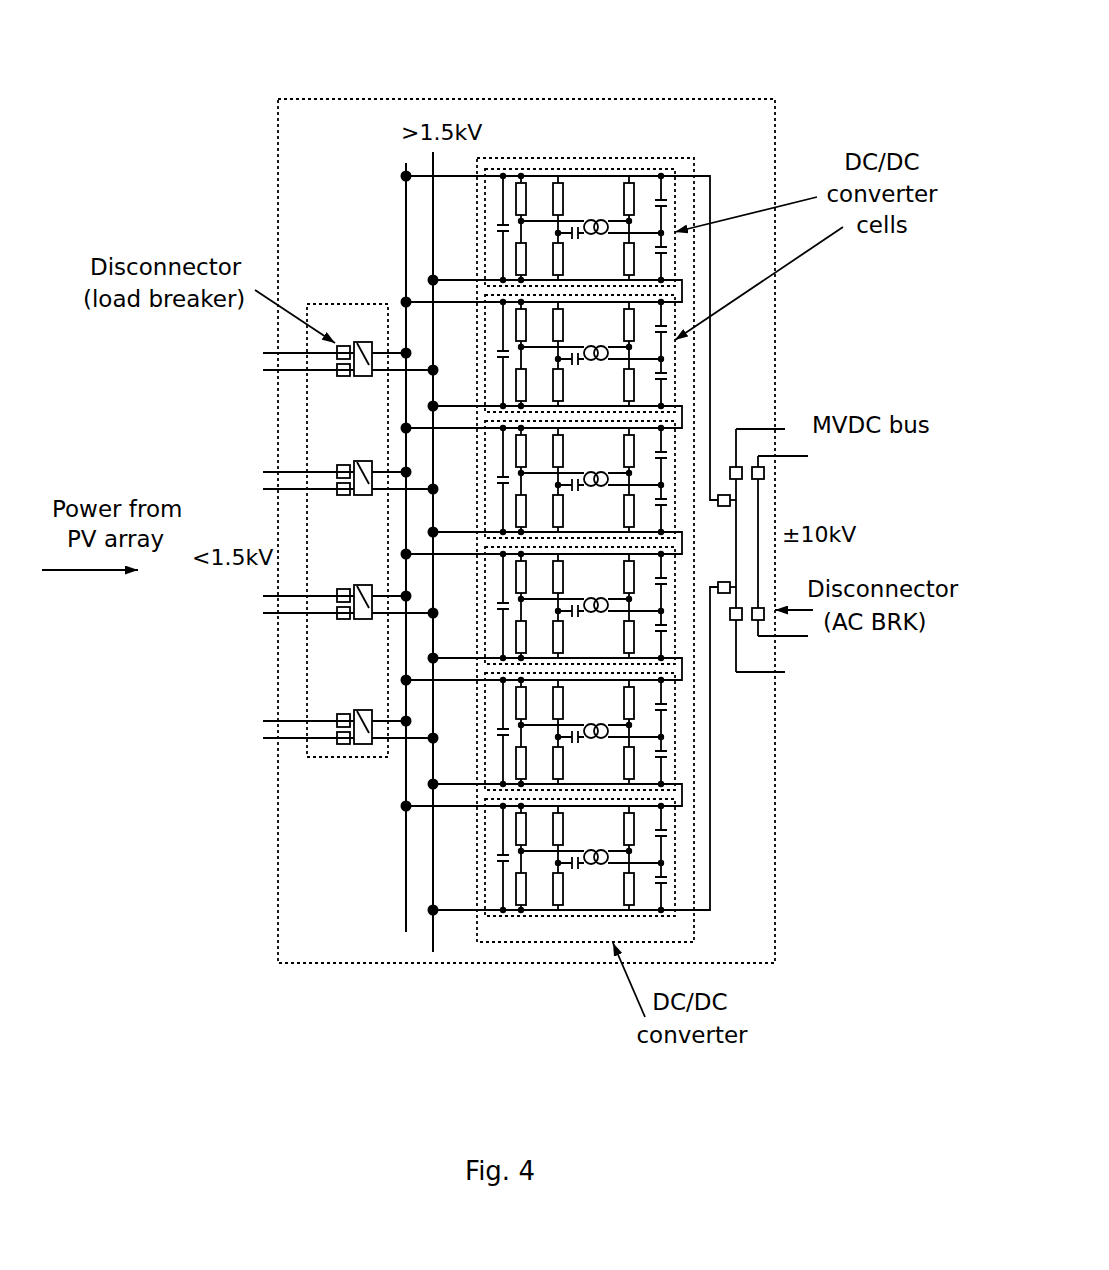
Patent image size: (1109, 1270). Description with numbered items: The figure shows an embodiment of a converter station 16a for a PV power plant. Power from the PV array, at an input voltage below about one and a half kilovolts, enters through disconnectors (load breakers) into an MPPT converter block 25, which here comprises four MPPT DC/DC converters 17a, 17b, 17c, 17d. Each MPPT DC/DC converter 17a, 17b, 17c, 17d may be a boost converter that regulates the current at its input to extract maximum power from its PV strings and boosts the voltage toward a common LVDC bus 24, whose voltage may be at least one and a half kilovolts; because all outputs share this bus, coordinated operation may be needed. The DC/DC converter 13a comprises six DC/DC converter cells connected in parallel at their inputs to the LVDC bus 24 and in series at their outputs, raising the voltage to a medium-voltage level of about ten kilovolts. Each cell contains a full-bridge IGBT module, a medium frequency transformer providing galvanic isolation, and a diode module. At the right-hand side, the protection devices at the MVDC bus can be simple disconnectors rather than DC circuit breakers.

The DC/DC converter 13a is at (597, 158).
The converter station 16a is at (742, 99).
The MPPT DC/DC converter 17a is at (365, 342).
The MPPT DC/DC converter 17b is at (363, 461).
The MPPT DC/DC converter 17c is at (365, 585).
The MPPT DC/DC converter 17d is at (366, 710).
The common LVDC bus 24 is at (418, 942).
The MPPT converter block 25 is at (318, 760).